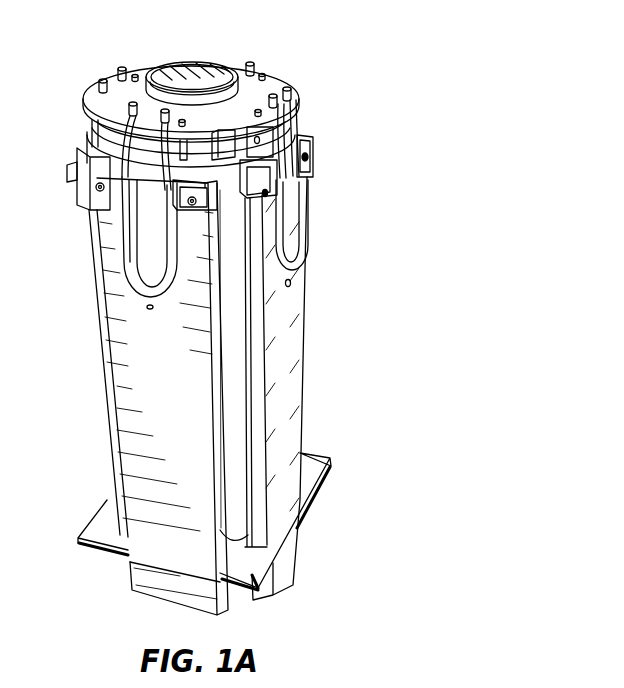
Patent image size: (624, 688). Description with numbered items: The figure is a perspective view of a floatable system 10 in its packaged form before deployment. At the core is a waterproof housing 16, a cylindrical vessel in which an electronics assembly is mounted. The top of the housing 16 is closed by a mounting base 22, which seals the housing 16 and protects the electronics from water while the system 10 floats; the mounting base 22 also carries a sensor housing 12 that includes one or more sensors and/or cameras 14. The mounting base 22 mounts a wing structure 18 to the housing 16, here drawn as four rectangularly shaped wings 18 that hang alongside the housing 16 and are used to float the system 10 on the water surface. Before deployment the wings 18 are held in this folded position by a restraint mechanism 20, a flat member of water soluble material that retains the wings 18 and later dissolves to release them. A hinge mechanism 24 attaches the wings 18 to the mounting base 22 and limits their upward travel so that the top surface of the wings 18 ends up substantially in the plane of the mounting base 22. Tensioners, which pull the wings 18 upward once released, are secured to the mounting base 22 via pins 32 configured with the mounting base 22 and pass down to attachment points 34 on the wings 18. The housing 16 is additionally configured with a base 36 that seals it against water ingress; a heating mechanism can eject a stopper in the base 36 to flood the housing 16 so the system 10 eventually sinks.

The floatable system 10 is at (463, 123).
The sensor housing 12 is at (200, 70).
The sensors and/or cameras 14 is at (201, 72).
The waterproof housing 16 is at (233, 442).
The wing structure 18 is at (305, 343).
The restraint mechanism 20 is at (330, 467).
The mounting base 22 is at (263, 82).
The hinge mechanism 24 is at (150, 152).
The pins 32 is at (114, 72).
The attachment points 34 is at (302, 182).
The base 36 is at (298, 116).